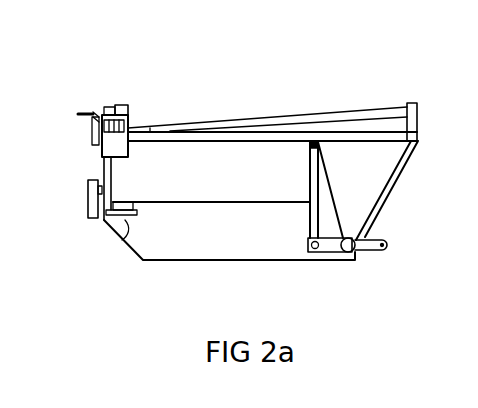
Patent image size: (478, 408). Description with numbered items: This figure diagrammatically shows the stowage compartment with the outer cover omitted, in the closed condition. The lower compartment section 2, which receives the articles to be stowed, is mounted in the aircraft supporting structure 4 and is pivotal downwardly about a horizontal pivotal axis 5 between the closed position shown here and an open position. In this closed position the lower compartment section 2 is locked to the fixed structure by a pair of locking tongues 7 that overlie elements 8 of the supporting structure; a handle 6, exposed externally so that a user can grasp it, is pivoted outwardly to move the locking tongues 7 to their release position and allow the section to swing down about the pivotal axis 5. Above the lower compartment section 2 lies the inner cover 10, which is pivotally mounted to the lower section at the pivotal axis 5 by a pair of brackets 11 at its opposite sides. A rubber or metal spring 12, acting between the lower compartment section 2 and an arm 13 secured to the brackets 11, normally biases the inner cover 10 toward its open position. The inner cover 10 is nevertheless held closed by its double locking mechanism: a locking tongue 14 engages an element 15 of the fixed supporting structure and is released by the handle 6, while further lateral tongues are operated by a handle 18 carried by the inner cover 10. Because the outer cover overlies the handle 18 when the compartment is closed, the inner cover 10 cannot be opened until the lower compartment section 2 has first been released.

The lower compartment section 2 is at (200, 243).
The aircraft supporting structure 4 is at (386, 243).
The horizontal pivotal axis 5 is at (348, 252).
The handle 6 is at (93, 212).
The locking tongues 7 is at (122, 200).
The elements of the fixed supporting structure 8 is at (125, 221).
The inner cover 10 is at (229, 122).
The brackets 11 is at (378, 190).
The spring 12 is at (308, 188).
The arm 13 is at (330, 251).
The locking tongue 14 is at (95, 113).
The element of the fixed supporting structure 15 is at (85, 114).
The handle 18 is at (96, 134).